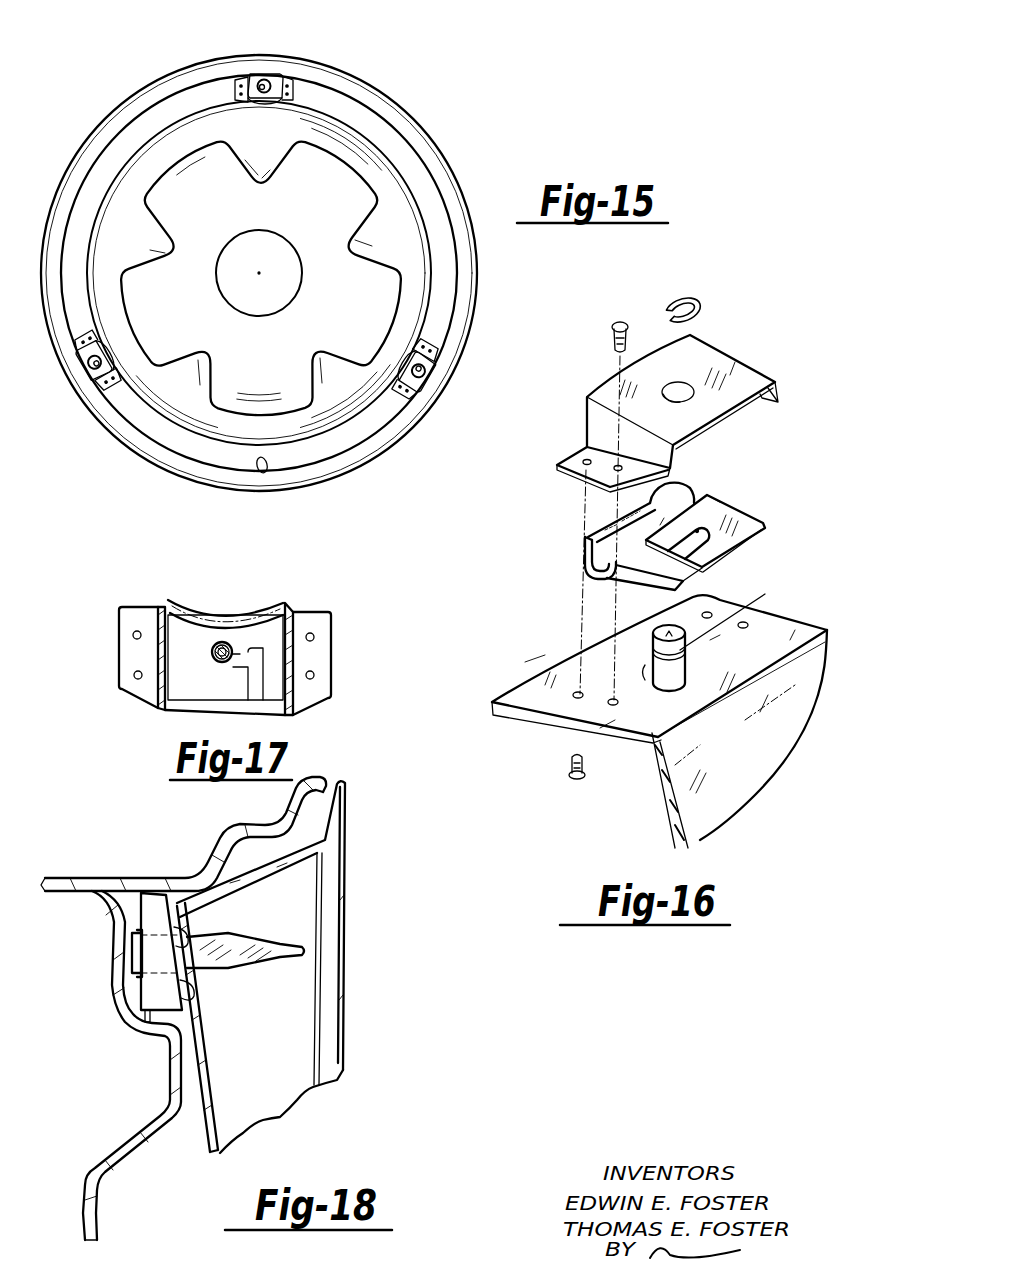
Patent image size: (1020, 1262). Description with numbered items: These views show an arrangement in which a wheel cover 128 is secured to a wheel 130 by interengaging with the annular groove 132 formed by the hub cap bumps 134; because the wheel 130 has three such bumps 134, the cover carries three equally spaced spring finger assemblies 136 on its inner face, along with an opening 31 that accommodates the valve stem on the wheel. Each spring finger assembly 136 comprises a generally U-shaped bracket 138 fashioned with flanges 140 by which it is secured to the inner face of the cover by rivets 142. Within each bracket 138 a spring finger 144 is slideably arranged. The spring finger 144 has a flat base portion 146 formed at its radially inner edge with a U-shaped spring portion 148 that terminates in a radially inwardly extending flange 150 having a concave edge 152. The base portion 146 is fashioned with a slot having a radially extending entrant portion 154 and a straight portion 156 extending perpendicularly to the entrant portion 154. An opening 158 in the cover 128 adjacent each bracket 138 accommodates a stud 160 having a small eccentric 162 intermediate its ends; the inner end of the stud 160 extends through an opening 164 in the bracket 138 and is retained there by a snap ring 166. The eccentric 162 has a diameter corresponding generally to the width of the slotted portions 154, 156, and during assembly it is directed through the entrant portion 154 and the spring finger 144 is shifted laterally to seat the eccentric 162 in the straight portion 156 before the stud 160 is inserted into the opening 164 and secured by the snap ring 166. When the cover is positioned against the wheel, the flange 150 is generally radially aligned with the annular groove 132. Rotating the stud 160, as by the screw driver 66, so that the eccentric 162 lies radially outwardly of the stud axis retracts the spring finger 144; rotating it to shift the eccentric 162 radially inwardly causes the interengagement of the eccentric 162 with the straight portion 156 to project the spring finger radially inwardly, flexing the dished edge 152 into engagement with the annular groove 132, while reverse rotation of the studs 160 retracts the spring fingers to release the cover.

In FIG. 15, the opening 31 is at (258, 472).
In FIG. 18, the screw driver 66 is at (265, 941).
In FIG. 16, the wheel cover 128 is at (660, 807).
In FIG. 18, the wheel cover 128 is at (352, 902).
In FIG. 15, the wheel 130 is at (259, 273).
In FIG. 18, the wheel 130 is at (70, 874).
In FIG. 18, the annular groove 132 is at (147, 1042).
In FIG. 18, the hub cap bumps 134 is at (192, 1014).
In FIG. 15, the spring finger assemblies 136 is at (287, 72).
In FIG. 16, the bracket 138 is at (733, 368).
In FIG. 18, the bracket 138 is at (155, 897).
In FIG. 16, the flanges 140 is at (593, 470).
In FIG. 17, the flanges 140 is at (127, 656).
In FIG. 16, the rivets 142 is at (636, 292).
In FIG. 16, the spring finger 144 is at (740, 503).
In FIG. 16, the flat base portion 146 is at (742, 528).
In FIG. 17, the flat base portion 146 is at (180, 655).
In FIG. 16, the U-shaped spring portion 148 is at (598, 572).
In FIG. 16, the flange 150 is at (585, 536).
In FIG. 15, the concave edge 152 is at (262, 99).
In FIG. 16, the concave edge 152 is at (697, 530).
In FIG. 17, the concave edge 152 is at (218, 620).
In FIG. 18, the concave edge 152 is at (146, 1022).
In FIG. 16, the entrant portion 154 is at (703, 574).
In FIG. 17, the entrant portion 154 is at (248, 688).
In FIG. 16, the straight portion 156 is at (718, 506).
In FIG. 17, the straight portion 156 is at (242, 655).
In FIG. 16, the opening 158 is at (655, 662).
In FIG. 16, the stud 160 is at (688, 680).
In FIG. 17, the stud 160 is at (240, 652).
In FIG. 18, the stud 160 is at (133, 953).
In FIG. 16, the eccentric 162 is at (627, 690).
In FIG. 17, the eccentric 162 is at (222, 659).
In FIG. 16, the opening 164 is at (684, 381).
In FIG. 16, the snap ring 166 is at (701, 303).